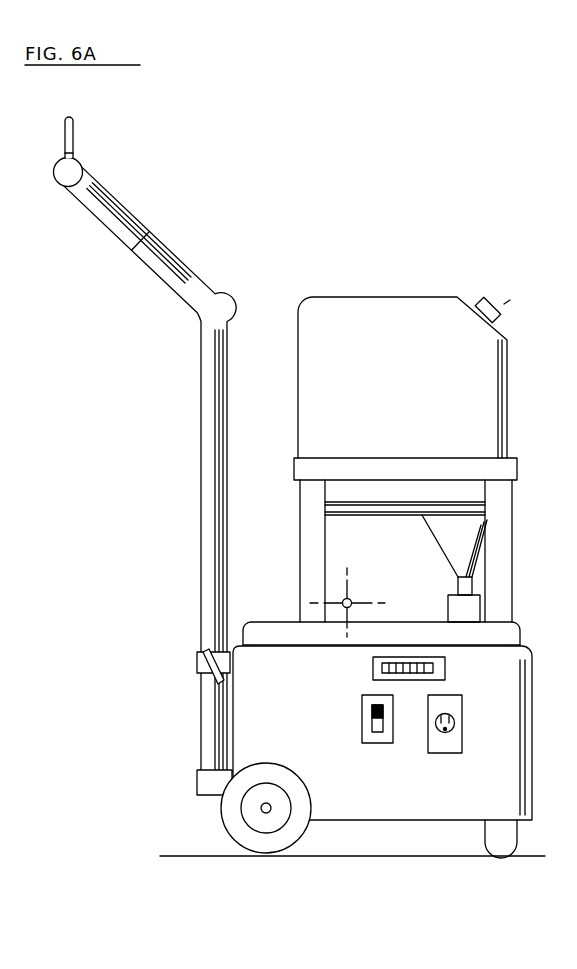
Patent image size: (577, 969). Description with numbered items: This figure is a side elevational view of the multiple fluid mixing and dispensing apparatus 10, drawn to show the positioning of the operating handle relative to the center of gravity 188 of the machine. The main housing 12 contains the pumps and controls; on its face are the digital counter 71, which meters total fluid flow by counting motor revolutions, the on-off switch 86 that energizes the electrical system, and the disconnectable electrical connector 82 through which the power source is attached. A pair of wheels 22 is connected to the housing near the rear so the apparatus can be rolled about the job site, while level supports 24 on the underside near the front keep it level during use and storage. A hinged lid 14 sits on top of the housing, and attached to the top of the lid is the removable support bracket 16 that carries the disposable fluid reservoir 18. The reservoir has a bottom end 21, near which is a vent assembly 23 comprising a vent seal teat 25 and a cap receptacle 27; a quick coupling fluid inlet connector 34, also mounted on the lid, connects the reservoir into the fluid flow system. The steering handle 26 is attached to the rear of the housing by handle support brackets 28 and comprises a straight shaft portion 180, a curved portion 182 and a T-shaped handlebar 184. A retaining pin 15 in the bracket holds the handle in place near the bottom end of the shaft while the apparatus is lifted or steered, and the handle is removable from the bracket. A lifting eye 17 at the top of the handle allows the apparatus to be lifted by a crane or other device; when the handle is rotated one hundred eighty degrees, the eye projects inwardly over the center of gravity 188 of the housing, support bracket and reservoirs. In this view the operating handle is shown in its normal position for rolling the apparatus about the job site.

The multiple fluid mixing and dispensing apparatus 10 is at (374, 197).
The main housing 12 is at (532, 754).
The hinged lid 14 is at (520, 640).
The retaining pin 15 is at (212, 681).
The removable support bracket 16 is at (512, 556).
The lifting eye 17 is at (77, 128).
The fluid reservoir 18 is at (421, 372).
The bottom end 21 is at (353, 297).
The wheels 22 is at (287, 770).
The vent assembly 23 is at (502, 301).
The level supports 24 is at (517, 846).
The vent seal teat 25 is at (505, 306).
The steering handle 26 is at (147, 466).
The cap receptacle 27 is at (482, 300).
The handle support brackets 28 is at (197, 661).
The quick coupling fluid inlet connector 34 is at (448, 616).
The digital counter 71 is at (448, 668).
The disconnectable electrical connector 82 is at (462, 710).
The on-off switch 86 is at (362, 721).
The shaft portion 180 is at (201, 538).
The curved portion 182 is at (185, 262).
The T-shaped handlebar 184 is at (84, 176).
The center of gravity 188 is at (352, 600).